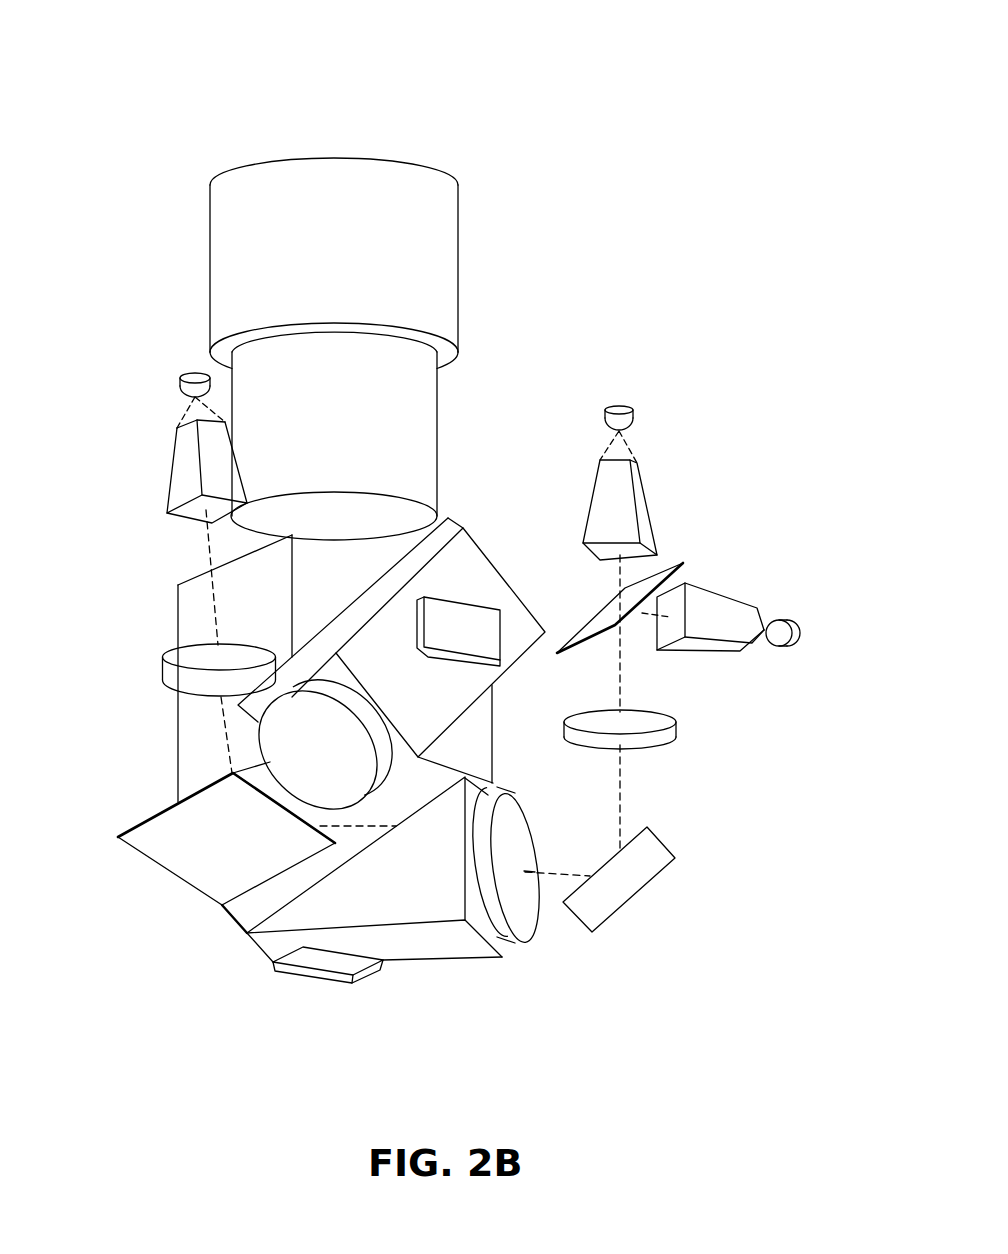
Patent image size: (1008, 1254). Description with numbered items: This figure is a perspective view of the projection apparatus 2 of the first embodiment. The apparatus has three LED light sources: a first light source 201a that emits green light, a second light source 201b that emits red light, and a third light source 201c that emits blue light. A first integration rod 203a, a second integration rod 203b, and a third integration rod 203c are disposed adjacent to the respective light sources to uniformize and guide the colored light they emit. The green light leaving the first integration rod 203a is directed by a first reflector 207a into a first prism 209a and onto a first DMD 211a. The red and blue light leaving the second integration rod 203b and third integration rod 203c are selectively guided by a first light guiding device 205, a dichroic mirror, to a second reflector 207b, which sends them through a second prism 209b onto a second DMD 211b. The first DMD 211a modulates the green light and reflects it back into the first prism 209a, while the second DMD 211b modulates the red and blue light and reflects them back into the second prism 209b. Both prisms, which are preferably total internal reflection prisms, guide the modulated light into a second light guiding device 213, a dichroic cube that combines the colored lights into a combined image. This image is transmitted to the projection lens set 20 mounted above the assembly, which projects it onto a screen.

The projection apparatus 2 is at (735, 70).
The projection lens set 20 is at (395, 160).
The first light source 201a is at (178, 384).
The second light source 201b is at (635, 412).
The third light source 201c is at (788, 620).
The first integration rod 203a is at (183, 461).
The second integration rod 203b is at (647, 498).
The third integration rod 203c is at (717, 648).
The first light guiding device 205 is at (603, 621).
The first reflector 207a is at (187, 857).
The second reflector 207b is at (618, 883).
The first prism 209a is at (466, 554).
The second prism 209b is at (463, 948).
The first DMD 211a is at (478, 635).
The second DMD 211b is at (327, 972).
The second light guiding device 213 is at (218, 644).